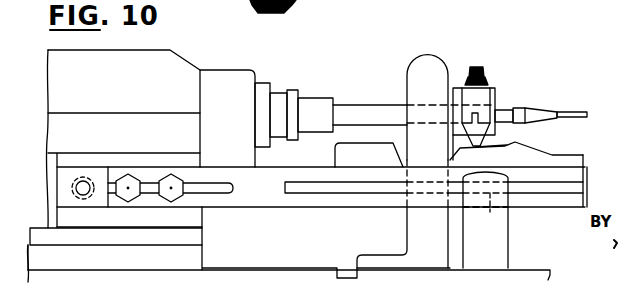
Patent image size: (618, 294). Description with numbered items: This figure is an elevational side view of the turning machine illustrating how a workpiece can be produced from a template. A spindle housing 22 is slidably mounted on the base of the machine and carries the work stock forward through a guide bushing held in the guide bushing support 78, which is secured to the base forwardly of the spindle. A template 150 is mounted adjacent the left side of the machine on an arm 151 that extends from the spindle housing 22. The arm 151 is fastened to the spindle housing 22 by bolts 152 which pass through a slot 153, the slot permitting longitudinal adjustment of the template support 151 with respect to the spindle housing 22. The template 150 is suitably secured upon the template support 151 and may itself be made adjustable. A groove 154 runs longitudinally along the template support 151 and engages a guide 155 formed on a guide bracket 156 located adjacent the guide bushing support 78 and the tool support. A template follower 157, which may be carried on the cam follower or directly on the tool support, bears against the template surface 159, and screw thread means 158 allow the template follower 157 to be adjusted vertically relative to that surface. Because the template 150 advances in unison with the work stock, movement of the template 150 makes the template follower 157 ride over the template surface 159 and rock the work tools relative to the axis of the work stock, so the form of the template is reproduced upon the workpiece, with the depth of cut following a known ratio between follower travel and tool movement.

The spindle housing 22 is at (123, 139).
The guide bushing support 78 is at (423, 62).
The template 150 is at (369, 155).
The arm 151 is at (358, 202).
The bolts 152 is at (172, 175).
The slot 153 is at (212, 183).
The groove 154 is at (556, 177).
The guide 155 is at (485, 220).
The guide bracket 156 is at (495, 255).
The template follower 157 is at (479, 147).
The screw thread means 158 is at (482, 71).
The template surface 159 is at (542, 153).